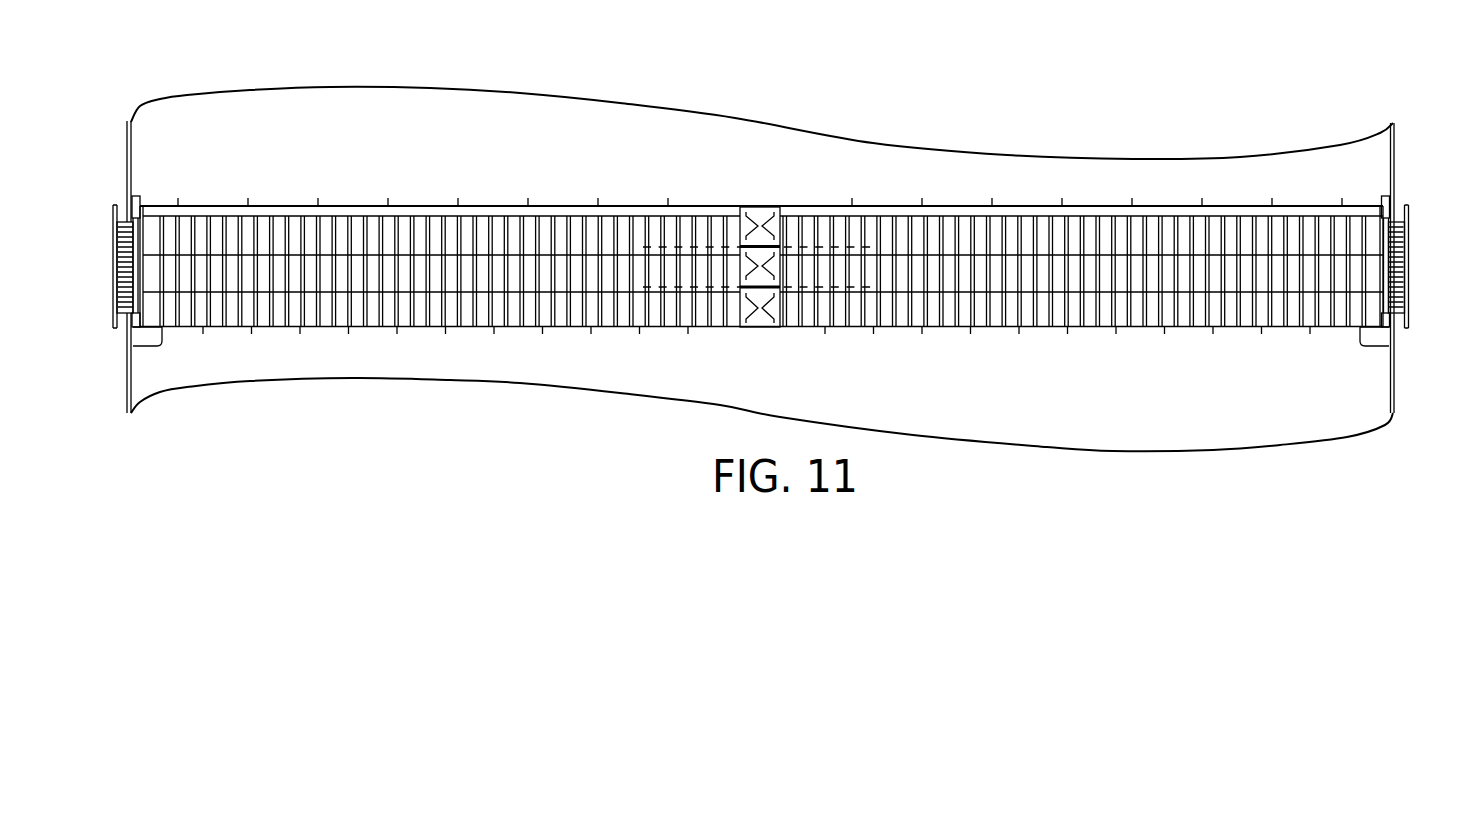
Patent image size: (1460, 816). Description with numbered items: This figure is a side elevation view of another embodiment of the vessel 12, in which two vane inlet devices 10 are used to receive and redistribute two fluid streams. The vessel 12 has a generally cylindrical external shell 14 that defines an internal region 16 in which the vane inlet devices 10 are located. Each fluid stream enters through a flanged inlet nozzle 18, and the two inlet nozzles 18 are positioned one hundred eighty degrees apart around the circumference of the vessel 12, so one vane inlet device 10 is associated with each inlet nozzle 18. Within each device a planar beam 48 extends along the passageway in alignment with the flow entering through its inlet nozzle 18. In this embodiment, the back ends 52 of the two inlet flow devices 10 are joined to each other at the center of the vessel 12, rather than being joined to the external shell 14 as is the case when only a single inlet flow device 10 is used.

The vane inlet device 10 is at (562, 194).
The vessel 12 is at (737, 110).
The external shell 14 is at (127, 145).
The internal region 16 is at (859, 168).
The flanged inlet nozzle 18 is at (113, 225).
The planar beam 48 is at (776, 207).
The back end 52 is at (774, 327).